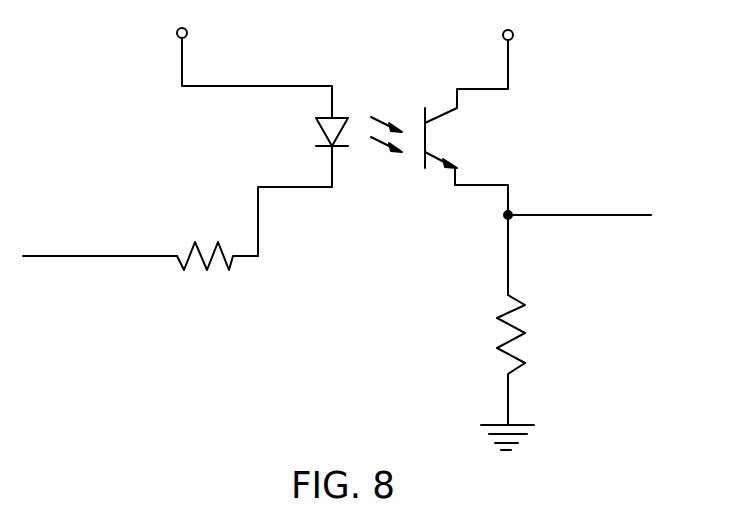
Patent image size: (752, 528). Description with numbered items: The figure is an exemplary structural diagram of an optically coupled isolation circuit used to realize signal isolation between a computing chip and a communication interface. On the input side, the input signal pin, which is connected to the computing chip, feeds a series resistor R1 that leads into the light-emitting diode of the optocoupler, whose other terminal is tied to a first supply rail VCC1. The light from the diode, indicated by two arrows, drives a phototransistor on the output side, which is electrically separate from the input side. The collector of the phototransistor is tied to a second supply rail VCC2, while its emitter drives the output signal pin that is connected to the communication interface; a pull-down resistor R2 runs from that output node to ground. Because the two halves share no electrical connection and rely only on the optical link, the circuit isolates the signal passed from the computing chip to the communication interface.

The input resistor R1 is at (217, 274).
The output pull-down resistor R2 is at (481, 360).
The first supply voltage terminal VCC1 is at (252, 59).
The second supply voltage terminal VCC2 is at (476, 62).